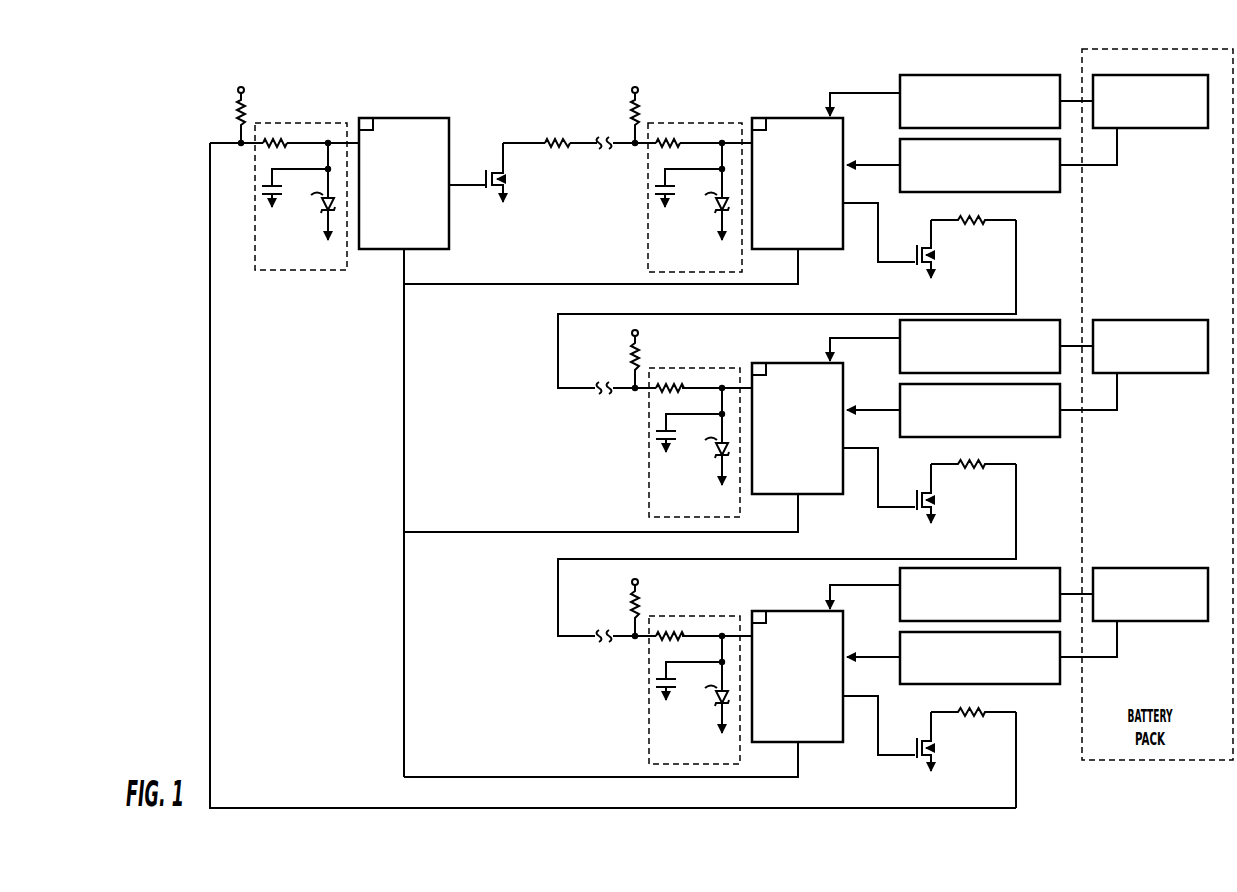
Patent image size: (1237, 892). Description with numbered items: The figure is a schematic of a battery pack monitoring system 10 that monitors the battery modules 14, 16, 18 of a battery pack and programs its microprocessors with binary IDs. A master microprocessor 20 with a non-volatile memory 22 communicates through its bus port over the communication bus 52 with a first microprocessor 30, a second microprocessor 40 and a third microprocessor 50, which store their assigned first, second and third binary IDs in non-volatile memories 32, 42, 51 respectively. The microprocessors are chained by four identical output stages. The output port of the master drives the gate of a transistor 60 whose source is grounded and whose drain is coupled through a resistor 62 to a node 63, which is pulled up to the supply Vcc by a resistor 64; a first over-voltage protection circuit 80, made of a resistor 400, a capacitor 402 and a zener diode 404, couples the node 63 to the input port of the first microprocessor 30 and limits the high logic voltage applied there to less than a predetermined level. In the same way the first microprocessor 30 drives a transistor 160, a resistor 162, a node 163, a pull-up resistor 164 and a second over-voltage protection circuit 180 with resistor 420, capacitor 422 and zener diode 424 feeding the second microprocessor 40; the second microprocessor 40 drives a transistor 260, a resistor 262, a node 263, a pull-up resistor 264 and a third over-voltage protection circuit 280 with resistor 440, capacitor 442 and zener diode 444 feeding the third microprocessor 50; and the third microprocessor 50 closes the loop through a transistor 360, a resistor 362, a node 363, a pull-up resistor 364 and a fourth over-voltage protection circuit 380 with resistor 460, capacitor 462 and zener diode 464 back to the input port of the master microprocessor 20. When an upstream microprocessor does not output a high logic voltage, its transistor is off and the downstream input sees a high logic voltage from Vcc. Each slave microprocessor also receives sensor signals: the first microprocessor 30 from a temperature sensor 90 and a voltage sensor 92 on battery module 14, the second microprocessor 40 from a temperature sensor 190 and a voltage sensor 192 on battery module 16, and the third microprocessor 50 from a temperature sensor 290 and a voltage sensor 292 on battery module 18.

The battery pack monitoring system 10 is at (727, 71).
The battery module 14 is at (1152, 75).
The battery module 16 is at (1152, 320).
The battery module 18 is at (1152, 568).
The master microprocessor 20 is at (449, 142).
The non-volatile memory 22 is at (363, 117).
The first microprocessor 30 is at (850, 147).
The non-volatile memory 32 is at (756, 117).
The second microprocessor 40 is at (850, 392).
The non-volatile memory 42 is at (756, 362).
The third microprocessor 50 is at (850, 639).
The non-volatile memory 51 is at (756, 610).
The communication bus 52 is at (403, 469).
The transistor 60 is at (516, 174).
The resistor 62 is at (550, 140).
The node 63 is at (634, 148).
The resistor 64 is at (638, 98).
The first over-voltage protection circuit 80 is at (647, 259).
The temperature sensor 90 is at (1002, 75).
The voltage sensor 92 is at (1032, 192).
The transistor 160 is at (946, 250).
The resistor 162 is at (968, 225).
The node 163 is at (634, 393).
The resistor 164 is at (638, 343).
The second over-voltage protection circuit 180 is at (647, 505).
The temperature sensor 190 is at (1003, 321).
The voltage sensor 192 is at (1032, 437).
The transistor 260 is at (946, 495).
The resistor 262 is at (968, 469).
The node 263 is at (634, 641).
The resistor 264 is at (638, 591).
The third over-voltage protection circuit 280 is at (647, 752).
The temperature sensor 290 is at (1003, 569).
The voltage sensor 292 is at (1032, 684).
The transistor 360 is at (946, 743).
The resistor 362 is at (968, 717).
The node 363 is at (240, 148).
The resistor 364 is at (245, 98).
The fourth over-voltage protection circuit 380 is at (315, 271).
The resistor 400 is at (663, 149).
The capacitor 402 is at (661, 201).
The zener diode 404 is at (716, 213).
The resistor 420 is at (664, 394).
The capacitor 422 is at (662, 447).
The zener diode 424 is at (716, 460).
The resistor 440 is at (664, 642).
The capacitor 442 is at (662, 695).
The zener diode 444 is at (716, 708).
The resistor 460 is at (270, 149).
The capacitor 462 is at (268, 201).
The zener diode 464 is at (322, 213).